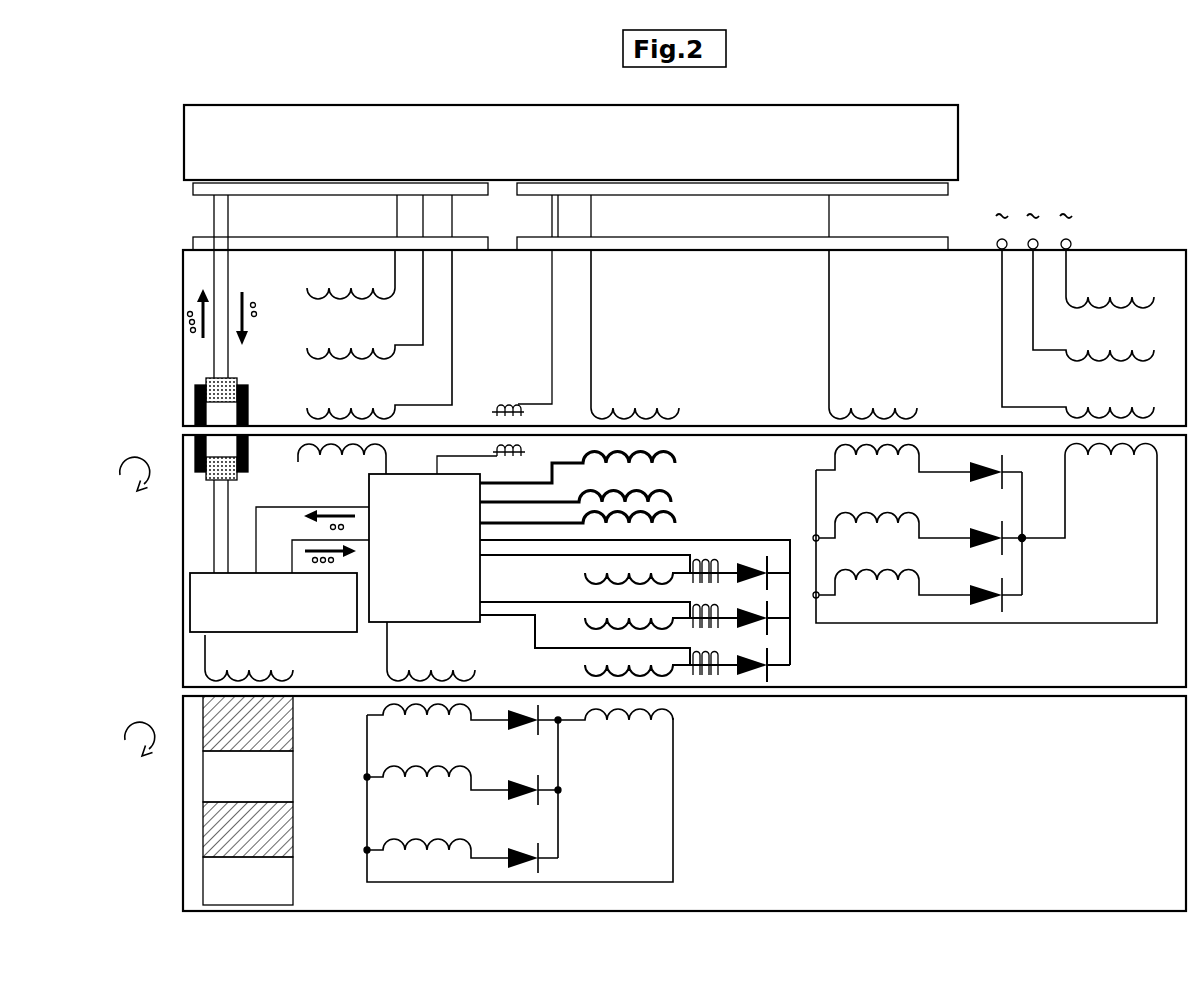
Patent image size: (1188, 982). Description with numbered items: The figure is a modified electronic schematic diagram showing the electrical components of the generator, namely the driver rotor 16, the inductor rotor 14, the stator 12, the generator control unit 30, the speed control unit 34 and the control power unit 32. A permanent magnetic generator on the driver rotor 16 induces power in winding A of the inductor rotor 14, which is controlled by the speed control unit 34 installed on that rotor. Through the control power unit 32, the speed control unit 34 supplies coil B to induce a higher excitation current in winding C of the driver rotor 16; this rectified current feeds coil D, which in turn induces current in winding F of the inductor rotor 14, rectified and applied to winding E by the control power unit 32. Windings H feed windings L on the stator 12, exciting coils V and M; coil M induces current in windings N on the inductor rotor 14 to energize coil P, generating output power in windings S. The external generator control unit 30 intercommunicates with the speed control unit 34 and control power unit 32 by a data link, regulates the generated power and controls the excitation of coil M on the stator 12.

The stator 12 is at (165, 320).
The inductor rotor 14 is at (637, 561).
The driver rotor 16 is at (165, 842).
The generator control unit 30 is at (252, 157).
The control power unit 32 is at (439, 599).
The speed control unit 34 is at (344, 614).